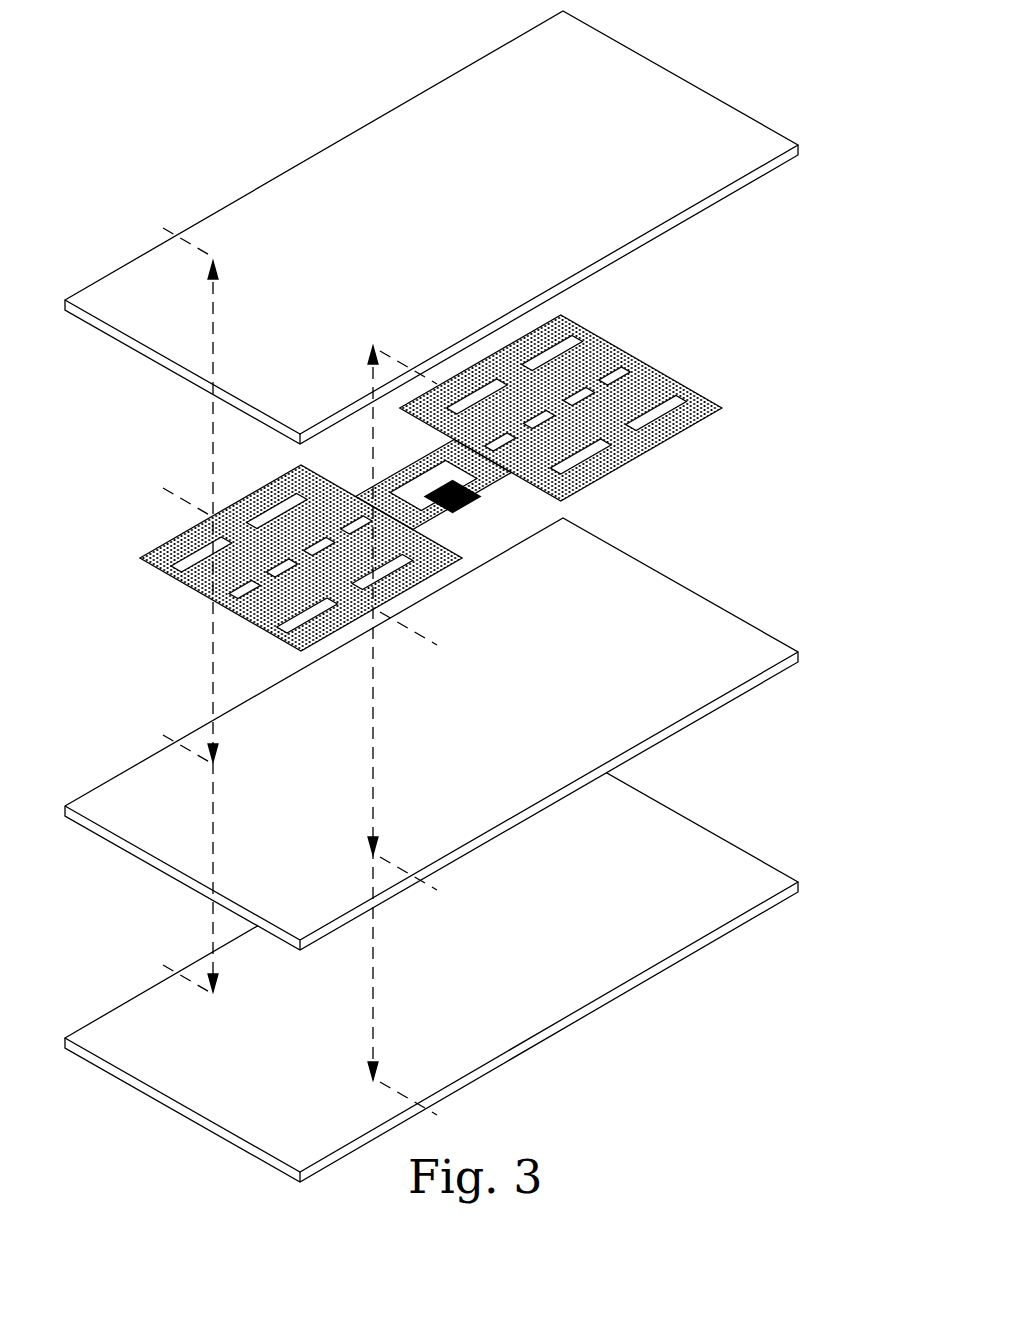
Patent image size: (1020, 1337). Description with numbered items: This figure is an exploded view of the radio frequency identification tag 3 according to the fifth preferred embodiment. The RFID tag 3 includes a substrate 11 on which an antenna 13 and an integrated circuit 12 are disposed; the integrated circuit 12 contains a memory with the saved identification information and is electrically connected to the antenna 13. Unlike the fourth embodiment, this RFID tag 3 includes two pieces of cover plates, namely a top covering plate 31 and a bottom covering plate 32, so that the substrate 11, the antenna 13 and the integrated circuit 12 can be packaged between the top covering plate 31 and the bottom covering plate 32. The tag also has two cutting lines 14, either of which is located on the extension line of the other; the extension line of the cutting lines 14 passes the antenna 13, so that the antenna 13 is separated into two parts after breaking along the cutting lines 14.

The RFID tag 3 is at (469, 596).
The substrate 11 is at (652, 595).
The integrated circuit 12 is at (468, 507).
The antenna 13 is at (652, 382).
The cutting lines 14 is at (192, 245).
The top covering plate 31 is at (648, 110).
The bottom covering plate 32 is at (682, 837).